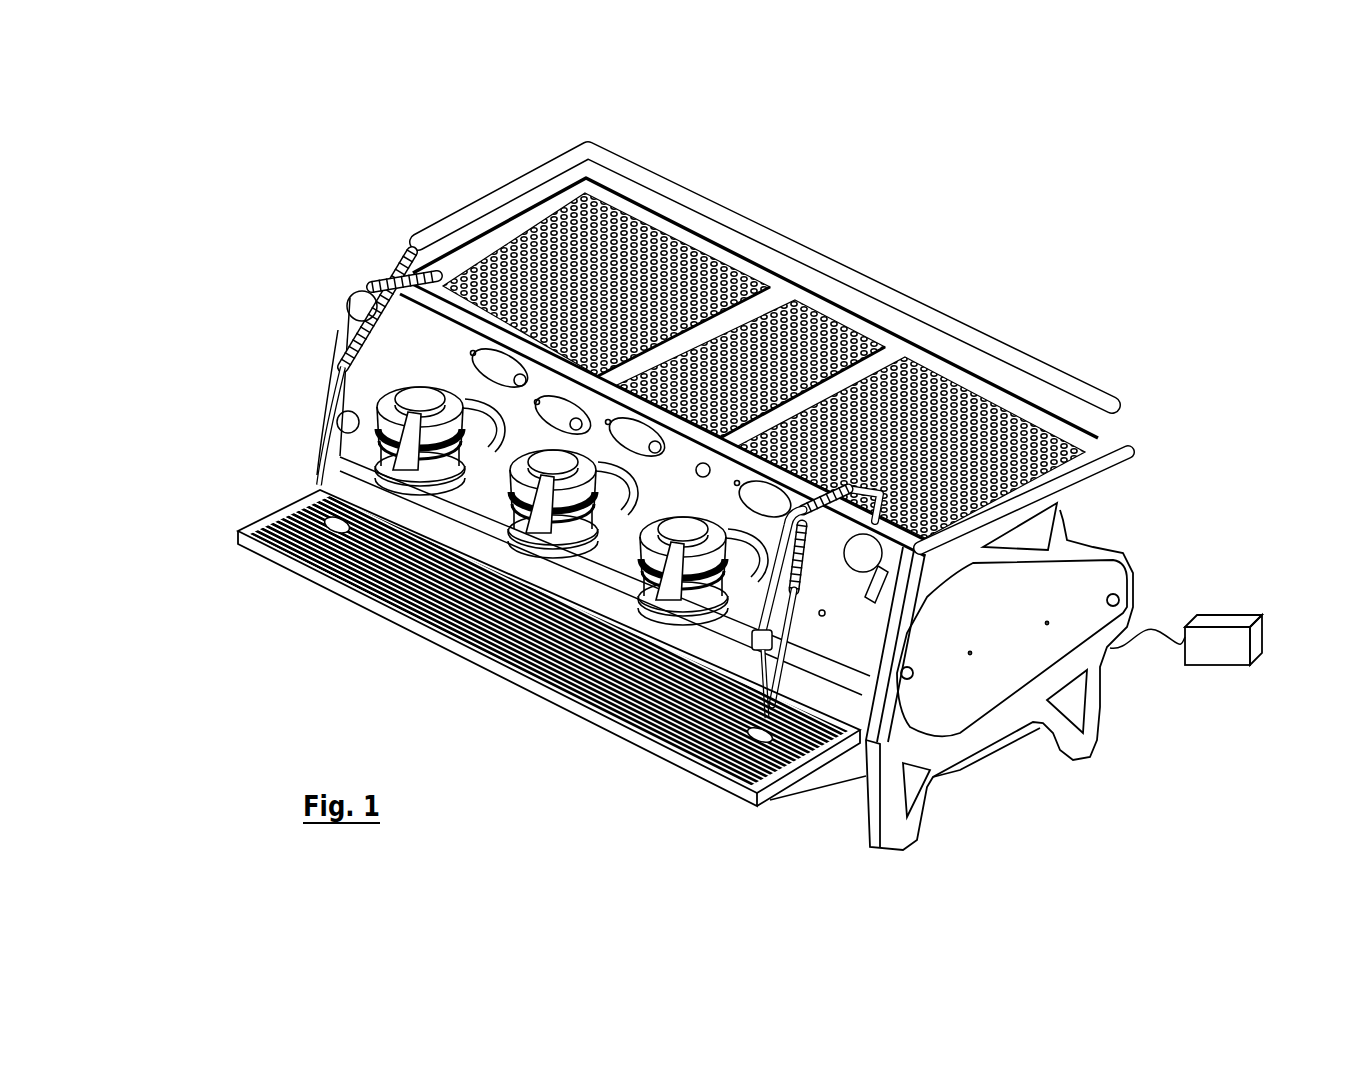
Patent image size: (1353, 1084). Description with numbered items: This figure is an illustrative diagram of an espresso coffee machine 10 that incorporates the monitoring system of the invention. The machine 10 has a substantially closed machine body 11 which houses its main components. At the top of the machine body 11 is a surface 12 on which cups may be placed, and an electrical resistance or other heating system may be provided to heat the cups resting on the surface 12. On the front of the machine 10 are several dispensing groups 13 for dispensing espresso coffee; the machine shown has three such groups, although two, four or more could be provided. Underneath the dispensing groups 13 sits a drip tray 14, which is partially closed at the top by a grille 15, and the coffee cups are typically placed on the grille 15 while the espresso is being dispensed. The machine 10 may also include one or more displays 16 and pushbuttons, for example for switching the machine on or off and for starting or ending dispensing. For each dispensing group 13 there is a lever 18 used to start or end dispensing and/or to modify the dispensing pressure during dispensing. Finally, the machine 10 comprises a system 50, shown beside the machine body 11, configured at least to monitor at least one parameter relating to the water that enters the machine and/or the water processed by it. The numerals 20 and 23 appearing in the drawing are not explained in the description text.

The espresso coffee machine 10 is at (935, 214).
The machine body 11 is at (1085, 540).
The surface 12 is at (490, 247).
The dispensing group 13 is at (370, 379).
The drip tray 14 is at (278, 554).
The grille 15 is at (285, 505).
The display 16 is at (353, 323).
The lever 18 is at (499, 525).
The hot water dispenser 20 is at (787, 650).
The drip tray grate 23 is at (608, 723).
The system 50 is at (1240, 592).